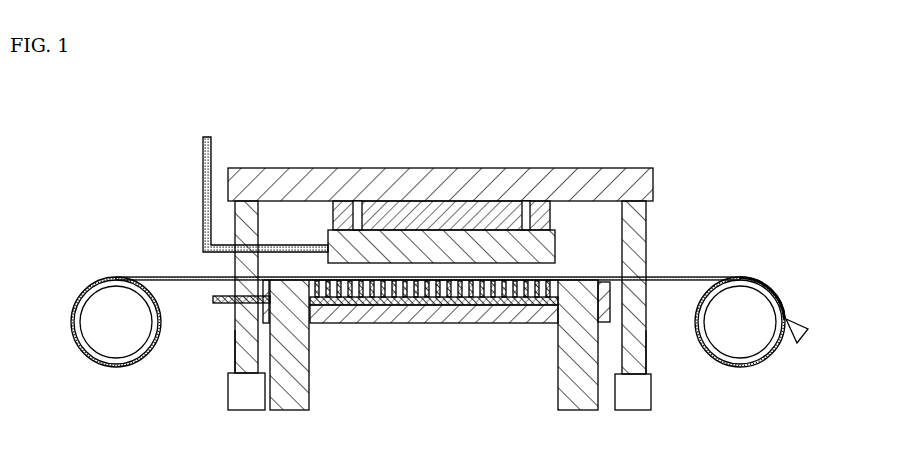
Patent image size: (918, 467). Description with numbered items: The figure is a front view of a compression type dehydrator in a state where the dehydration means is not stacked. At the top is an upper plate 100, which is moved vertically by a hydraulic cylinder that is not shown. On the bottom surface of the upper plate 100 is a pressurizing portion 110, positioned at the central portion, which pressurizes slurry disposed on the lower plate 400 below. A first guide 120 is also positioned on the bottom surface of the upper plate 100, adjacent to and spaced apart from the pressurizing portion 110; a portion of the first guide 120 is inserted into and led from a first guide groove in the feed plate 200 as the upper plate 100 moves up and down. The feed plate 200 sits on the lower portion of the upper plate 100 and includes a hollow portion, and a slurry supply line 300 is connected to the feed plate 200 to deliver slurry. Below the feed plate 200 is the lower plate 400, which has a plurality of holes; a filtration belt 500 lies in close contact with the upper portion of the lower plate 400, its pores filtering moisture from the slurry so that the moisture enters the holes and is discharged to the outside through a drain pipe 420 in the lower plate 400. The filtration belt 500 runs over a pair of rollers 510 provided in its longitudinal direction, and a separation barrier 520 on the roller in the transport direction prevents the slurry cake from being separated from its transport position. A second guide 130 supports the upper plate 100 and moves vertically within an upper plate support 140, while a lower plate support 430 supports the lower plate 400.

The upper plate 100 is at (289, 168).
The pressurizing portion 110 is at (526, 217).
The first guide 120 is at (333, 218).
The second guide 130 is at (235, 350).
The upper plate support 140 is at (228, 395).
The feed plate 200 is at (555, 248).
The slurry supply line 300 is at (203, 240).
The lower plate 400 is at (497, 323).
The drain pipe 420 is at (381, 305).
The lower plate support 430 is at (309, 397).
The filtration belt 500 is at (700, 278).
The pair of rollers 510 is at (74, 305).
The separation barrier 520 is at (808, 331).